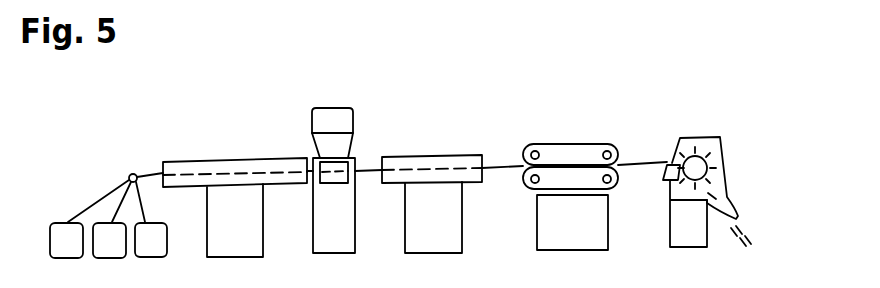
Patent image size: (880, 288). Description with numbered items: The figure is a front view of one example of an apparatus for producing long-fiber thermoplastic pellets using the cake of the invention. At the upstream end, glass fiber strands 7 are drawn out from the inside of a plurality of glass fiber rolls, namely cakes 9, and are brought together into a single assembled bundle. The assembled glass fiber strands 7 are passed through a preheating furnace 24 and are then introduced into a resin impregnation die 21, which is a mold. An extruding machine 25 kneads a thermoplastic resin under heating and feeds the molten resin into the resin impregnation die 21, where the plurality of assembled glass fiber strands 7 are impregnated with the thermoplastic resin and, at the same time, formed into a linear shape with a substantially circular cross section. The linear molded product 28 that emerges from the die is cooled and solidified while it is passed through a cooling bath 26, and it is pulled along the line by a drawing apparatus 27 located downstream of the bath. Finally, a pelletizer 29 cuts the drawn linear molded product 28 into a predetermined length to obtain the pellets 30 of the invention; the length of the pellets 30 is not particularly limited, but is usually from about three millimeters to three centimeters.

The glass fiber strands 7 is at (97, 202).
The cakes 9 is at (62, 237).
The resin impregnation die 21 is at (355, 158).
The preheating furnace 24 is at (235, 193).
The extruding machine 25 is at (325, 144).
The cooling bath 26 is at (432, 190).
The drawing apparatus 27 is at (570, 181).
The linear molded product 28 is at (503, 166).
The pelletizer 29 is at (677, 152).
The pellets 30 is at (758, 249).